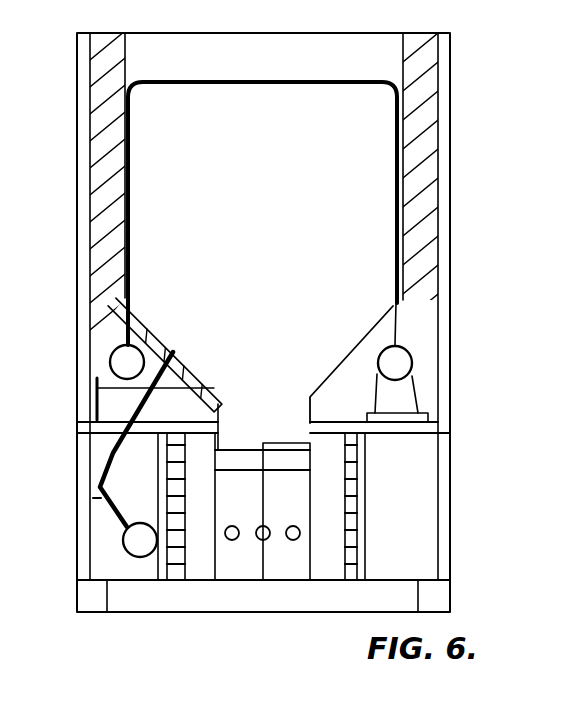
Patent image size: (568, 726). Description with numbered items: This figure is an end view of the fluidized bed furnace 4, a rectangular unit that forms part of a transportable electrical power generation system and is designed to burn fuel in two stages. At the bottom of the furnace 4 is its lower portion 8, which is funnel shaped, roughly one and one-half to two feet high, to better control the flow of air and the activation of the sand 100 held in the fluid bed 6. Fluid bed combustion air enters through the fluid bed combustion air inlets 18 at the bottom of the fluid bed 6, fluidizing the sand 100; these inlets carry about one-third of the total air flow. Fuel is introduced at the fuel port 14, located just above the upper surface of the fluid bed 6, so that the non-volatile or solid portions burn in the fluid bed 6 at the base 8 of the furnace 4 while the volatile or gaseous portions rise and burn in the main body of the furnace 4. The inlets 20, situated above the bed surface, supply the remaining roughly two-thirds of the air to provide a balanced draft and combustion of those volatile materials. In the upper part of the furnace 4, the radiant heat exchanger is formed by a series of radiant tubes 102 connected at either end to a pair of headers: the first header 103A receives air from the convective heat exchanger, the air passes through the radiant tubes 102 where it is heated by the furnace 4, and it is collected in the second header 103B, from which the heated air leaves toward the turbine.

The fluidized bed furnace 4 is at (505, 46).
The radiant tubes 102 is at (288, 79).
The first header 103A is at (112, 356).
The second header 103B is at (400, 355).
The inlets 20 is at (176, 352).
The fuel port 14 is at (188, 414).
The lower portion 8 is at (365, 462).
The sand 100 is at (288, 497).
The fluid bed combustion air inlets 18 is at (290, 541).
The fluid bed 6 is at (290, 557).